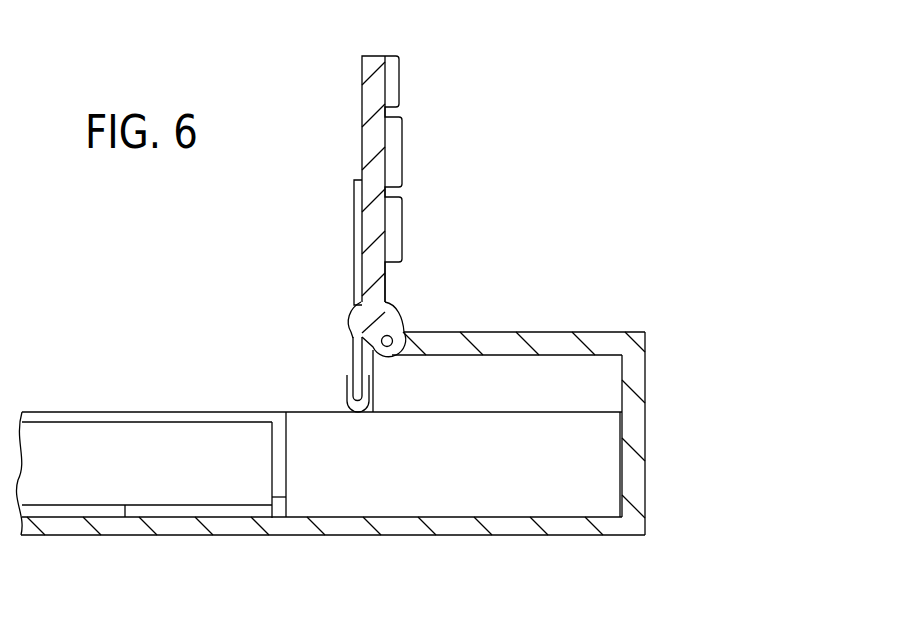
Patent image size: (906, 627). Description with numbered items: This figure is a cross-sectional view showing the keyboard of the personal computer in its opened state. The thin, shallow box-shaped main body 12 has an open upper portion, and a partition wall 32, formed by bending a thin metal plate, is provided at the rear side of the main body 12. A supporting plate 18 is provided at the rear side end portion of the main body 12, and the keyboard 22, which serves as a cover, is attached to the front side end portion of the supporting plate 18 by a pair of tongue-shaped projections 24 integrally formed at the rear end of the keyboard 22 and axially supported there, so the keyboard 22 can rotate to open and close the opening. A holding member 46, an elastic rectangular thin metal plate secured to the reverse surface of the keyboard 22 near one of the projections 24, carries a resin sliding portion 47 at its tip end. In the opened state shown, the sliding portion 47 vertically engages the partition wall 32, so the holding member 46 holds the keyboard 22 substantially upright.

The main body 12 is at (645, 485).
The supporting plate 18 is at (538, 332).
The keyboard 22 is at (400, 145).
The projections 24 is at (397, 315).
The partition wall 32 is at (527, 412).
The holding member 46 is at (352, 348).
The sliding portion 47 is at (348, 389).